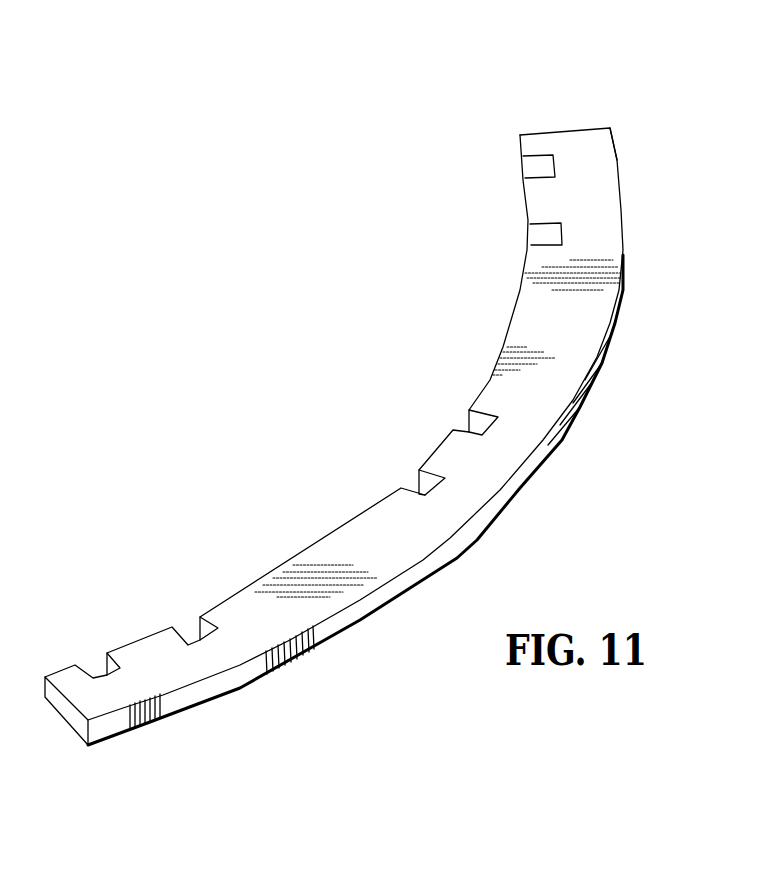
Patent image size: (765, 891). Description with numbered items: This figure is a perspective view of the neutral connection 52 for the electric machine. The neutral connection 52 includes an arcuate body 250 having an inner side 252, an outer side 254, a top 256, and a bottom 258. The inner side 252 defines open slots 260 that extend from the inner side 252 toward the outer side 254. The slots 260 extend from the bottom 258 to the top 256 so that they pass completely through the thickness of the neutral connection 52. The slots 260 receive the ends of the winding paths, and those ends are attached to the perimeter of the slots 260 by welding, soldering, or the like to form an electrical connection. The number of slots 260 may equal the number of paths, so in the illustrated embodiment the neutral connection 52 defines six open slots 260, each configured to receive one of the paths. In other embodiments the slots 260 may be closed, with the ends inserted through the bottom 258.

The neutral connection 52 is at (330, 243).
The arcuate body 250 is at (587, 137).
The inner side 252 is at (323, 545).
The outer side 254 is at (212, 690).
The top 256 is at (230, 600).
The bottom 258 is at (323, 650).
The open slots 260 is at (445, 412).